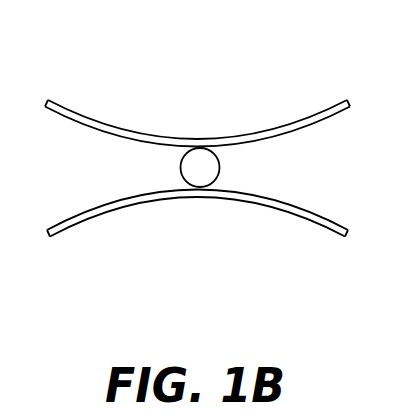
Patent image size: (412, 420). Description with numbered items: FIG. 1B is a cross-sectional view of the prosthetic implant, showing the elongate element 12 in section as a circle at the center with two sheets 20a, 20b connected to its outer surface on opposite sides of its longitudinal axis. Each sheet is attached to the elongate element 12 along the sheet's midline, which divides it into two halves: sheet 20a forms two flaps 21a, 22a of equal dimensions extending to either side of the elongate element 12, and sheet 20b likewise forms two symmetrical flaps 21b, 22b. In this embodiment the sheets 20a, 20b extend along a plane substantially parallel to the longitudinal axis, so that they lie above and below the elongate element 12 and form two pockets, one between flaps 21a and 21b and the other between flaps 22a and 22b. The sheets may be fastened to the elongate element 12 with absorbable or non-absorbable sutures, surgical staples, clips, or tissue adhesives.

The sheet 20a is at (162, 118).
The sheet 20b is at (202, 213).
The flap 21a is at (63, 117).
The flap 22a is at (333, 113).
The flap 21b is at (100, 212).
The flap 22b is at (288, 212).
The elongate element 12 is at (192, 172).